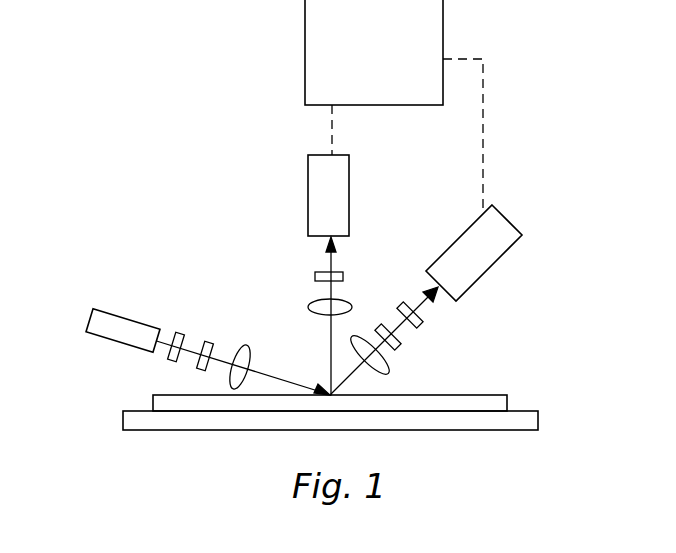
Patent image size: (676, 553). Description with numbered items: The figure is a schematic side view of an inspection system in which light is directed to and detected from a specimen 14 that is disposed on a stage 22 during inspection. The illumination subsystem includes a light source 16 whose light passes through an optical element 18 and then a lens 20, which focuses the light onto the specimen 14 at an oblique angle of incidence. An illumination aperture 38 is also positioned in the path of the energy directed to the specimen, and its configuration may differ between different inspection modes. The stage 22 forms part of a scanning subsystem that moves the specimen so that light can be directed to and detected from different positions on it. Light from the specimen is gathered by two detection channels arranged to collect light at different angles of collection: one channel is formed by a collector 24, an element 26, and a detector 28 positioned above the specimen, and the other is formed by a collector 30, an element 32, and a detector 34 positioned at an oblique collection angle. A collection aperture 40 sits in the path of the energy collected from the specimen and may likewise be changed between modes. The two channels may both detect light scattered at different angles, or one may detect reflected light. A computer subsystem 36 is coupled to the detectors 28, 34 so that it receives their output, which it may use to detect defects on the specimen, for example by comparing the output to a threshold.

The specimen 14 is at (163, 394).
The light source 16 is at (93, 310).
The optical element 18 is at (210, 343).
The lens 20 is at (247, 345).
The stage 22 is at (123, 420).
The collector 24 is at (310, 303).
The element 26 is at (315, 273).
The detector 28 is at (308, 197).
The collector 30 is at (387, 372).
The element 32 is at (417, 320).
The detector 34 is at (502, 252).
The computer subsystem 36 is at (362, 86).
The aperture 38 is at (180, 335).
The aperture 40 is at (402, 350).